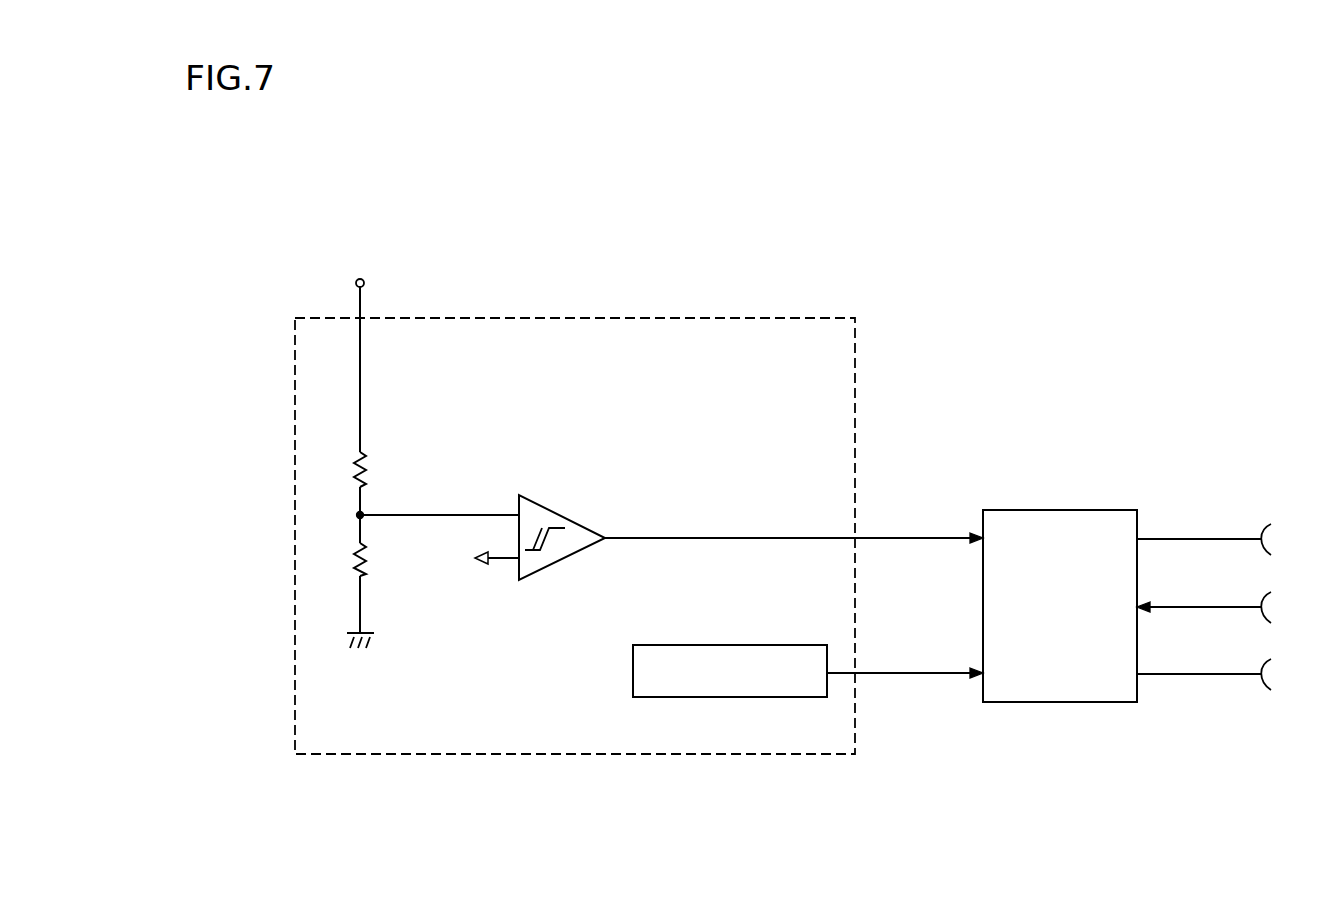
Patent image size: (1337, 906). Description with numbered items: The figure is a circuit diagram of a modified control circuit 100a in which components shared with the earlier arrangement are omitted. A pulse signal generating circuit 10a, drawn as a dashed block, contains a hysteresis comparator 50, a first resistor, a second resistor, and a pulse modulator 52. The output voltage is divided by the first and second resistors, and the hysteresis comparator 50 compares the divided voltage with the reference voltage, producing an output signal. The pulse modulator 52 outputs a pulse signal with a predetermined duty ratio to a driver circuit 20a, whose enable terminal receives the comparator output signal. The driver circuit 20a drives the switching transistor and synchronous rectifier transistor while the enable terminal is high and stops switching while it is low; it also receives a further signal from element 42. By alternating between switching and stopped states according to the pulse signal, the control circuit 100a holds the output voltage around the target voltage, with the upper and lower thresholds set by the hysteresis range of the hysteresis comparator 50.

The control circuit 100a is at (827, 903).
The pulse signal generating circuit 10a is at (575, 755).
The hysteresis comparator 50 is at (562, 516).
The pulse modulator 52 is at (731, 645).
The driver circuit 20a is at (1060, 702).
The signal source (microcomputer) 42 is at (1218, 600).